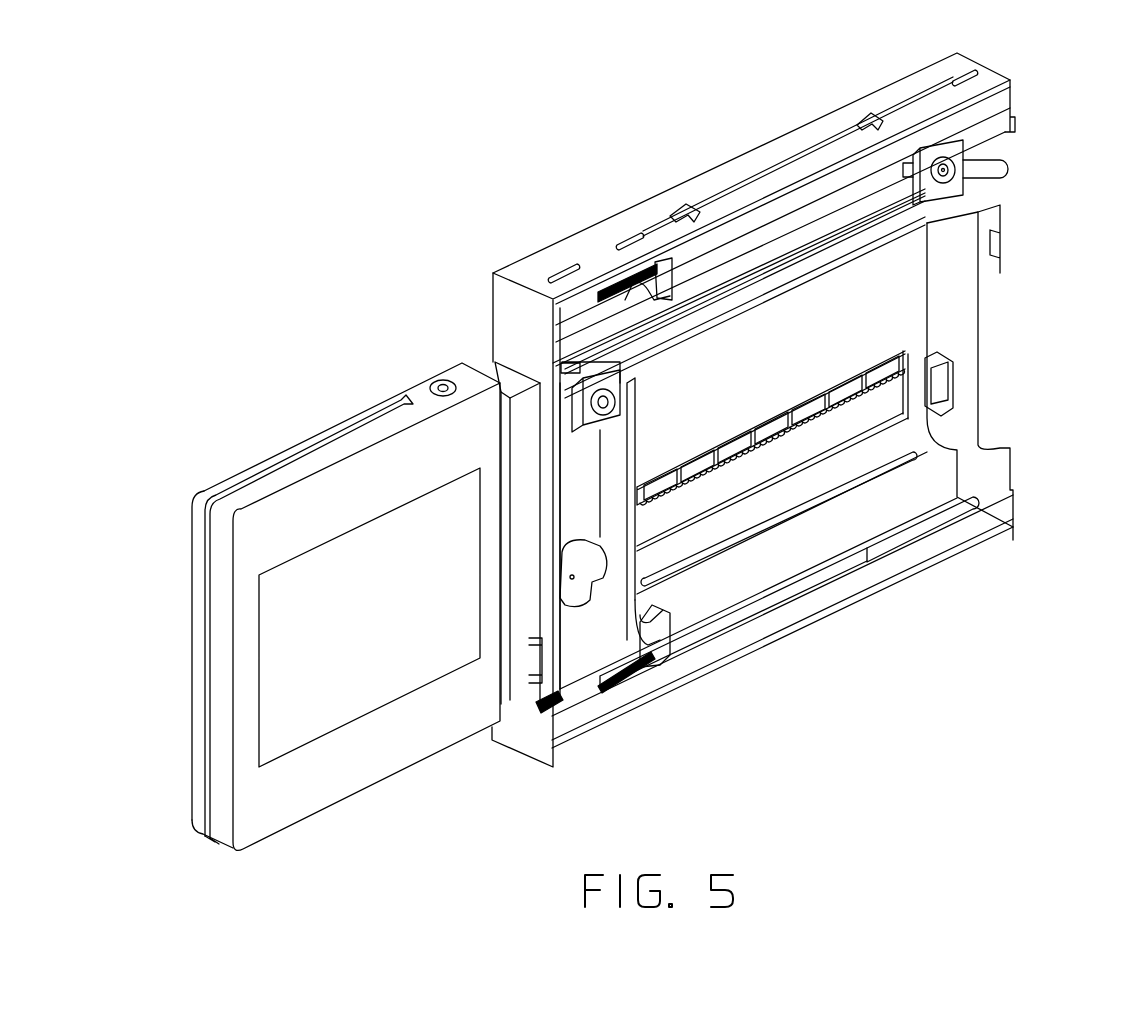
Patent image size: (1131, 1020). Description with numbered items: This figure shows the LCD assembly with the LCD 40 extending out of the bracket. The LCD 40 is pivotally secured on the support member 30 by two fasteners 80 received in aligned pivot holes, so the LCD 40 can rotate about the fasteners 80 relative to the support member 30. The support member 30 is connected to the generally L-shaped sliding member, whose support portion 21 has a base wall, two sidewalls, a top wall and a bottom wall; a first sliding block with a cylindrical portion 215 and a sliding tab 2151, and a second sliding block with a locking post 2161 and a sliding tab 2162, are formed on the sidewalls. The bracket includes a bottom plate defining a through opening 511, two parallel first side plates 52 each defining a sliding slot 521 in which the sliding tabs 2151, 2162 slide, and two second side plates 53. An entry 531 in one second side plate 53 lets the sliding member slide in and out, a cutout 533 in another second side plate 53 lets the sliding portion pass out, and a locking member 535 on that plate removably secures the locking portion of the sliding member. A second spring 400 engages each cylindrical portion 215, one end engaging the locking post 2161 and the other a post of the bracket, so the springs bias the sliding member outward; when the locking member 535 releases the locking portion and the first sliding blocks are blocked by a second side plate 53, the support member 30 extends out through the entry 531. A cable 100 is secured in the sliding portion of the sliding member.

The LCD 40 is at (293, 437).
The fastener 80 is at (440, 384).
The support member 30 is at (490, 372).
The support portion 21 is at (530, 365).
The first side plate 52 is at (797, 145).
The sliding slot 521 is at (737, 187).
The sliding tab 2162 is at (633, 237).
The sliding tab 2151 is at (565, 270).
The cable 100 is at (1000, 167).
The cutout 533 is at (962, 220).
The through opening 511 is at (950, 390).
The locking member 535 is at (887, 408).
The second side plate 53 is at (535, 743).
The entry 531 is at (535, 700).
The cylindrical portion 215 is at (585, 693).
The second spring 400 is at (643, 667).
The locking post 2161 is at (660, 650).